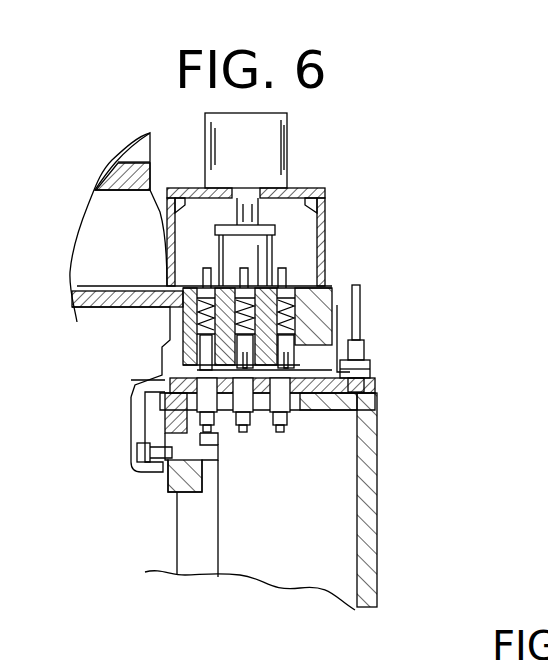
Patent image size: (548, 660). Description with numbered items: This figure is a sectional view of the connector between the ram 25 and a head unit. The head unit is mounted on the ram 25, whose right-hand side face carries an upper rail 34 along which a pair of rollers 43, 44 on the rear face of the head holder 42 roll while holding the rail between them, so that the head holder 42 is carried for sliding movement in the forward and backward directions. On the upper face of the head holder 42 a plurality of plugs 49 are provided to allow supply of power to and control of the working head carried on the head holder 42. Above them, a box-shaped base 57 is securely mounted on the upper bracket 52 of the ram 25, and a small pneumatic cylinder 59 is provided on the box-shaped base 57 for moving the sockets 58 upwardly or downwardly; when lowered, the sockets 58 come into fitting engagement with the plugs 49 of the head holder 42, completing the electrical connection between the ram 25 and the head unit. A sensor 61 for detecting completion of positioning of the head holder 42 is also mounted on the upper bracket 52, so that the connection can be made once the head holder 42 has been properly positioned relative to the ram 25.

The small pneumatic cylinder 59 is at (263, 143).
The box-shaped base 57 is at (328, 214).
The upper bracket 52 is at (333, 305).
The sensor 61 is at (367, 357).
The sockets 58 is at (183, 312).
The plugs 49 is at (435, 423).
The roller 43 is at (150, 453).
The roller 44 is at (203, 448).
The head holder 42 is at (377, 547).
The ram 25 is at (165, 515).
The upper rail 34 is at (192, 455).